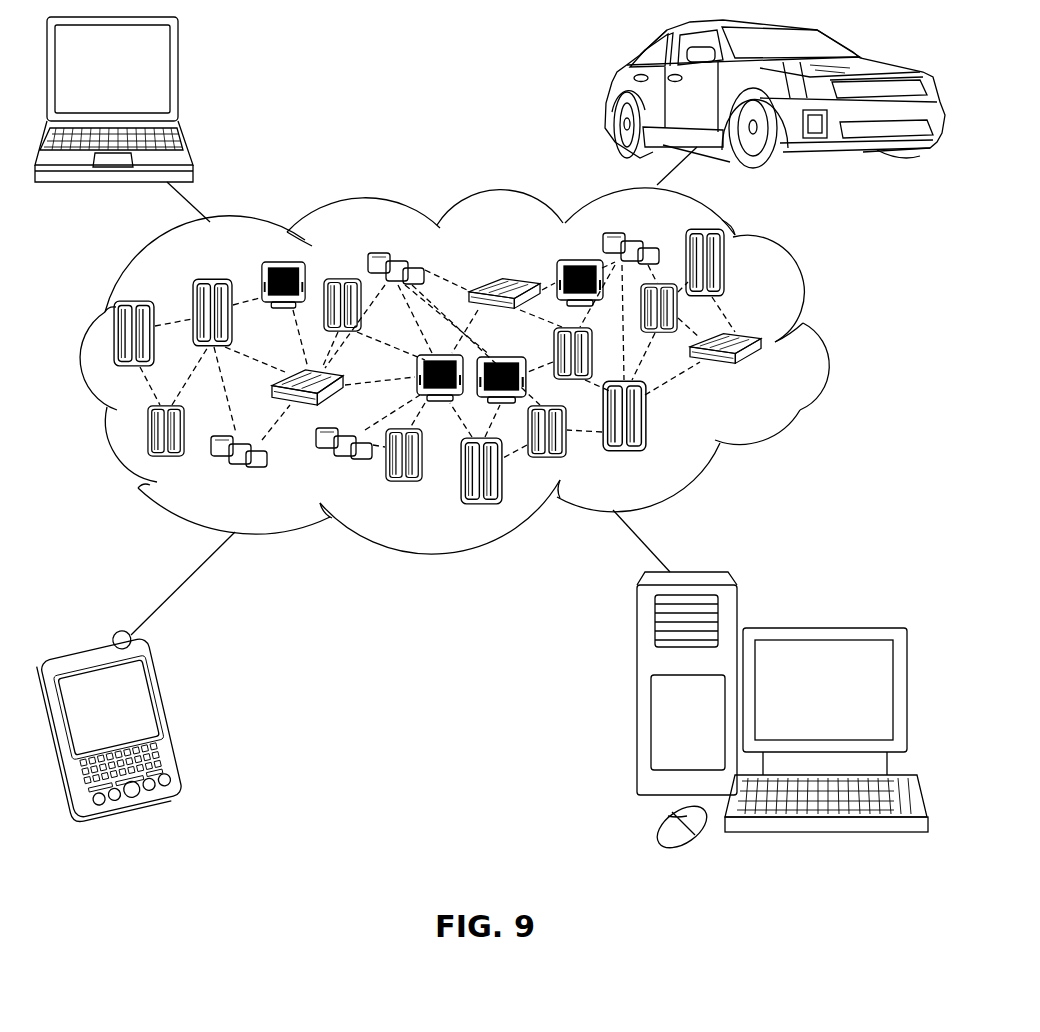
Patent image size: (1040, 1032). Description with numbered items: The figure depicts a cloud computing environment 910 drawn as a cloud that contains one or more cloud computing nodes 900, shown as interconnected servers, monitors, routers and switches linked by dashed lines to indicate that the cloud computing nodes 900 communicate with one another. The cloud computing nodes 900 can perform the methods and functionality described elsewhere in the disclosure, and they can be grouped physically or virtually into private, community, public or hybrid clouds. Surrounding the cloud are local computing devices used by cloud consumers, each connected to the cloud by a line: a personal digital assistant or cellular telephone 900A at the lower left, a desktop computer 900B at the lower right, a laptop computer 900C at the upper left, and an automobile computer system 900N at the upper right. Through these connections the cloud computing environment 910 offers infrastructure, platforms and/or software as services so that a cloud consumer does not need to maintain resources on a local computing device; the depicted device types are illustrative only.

The cloud computing nodes 900 is at (769, 374).
The cloud computing environment 910 is at (821, 349).
The personal digital assistant (PDA) or cellular telephone 900A is at (172, 720).
The desktop computer 900B is at (821, 627).
The laptop computer 900C is at (180, 79).
The automobile computer system 900N is at (606, 93).